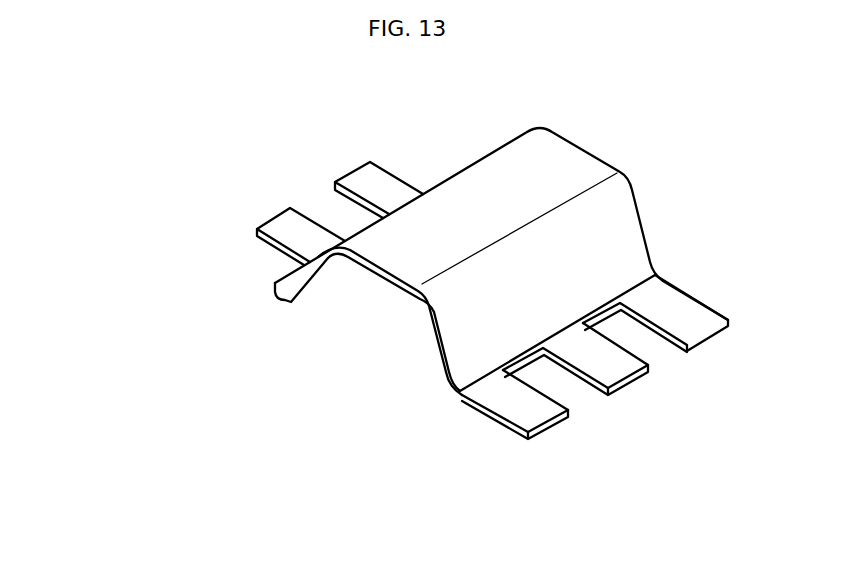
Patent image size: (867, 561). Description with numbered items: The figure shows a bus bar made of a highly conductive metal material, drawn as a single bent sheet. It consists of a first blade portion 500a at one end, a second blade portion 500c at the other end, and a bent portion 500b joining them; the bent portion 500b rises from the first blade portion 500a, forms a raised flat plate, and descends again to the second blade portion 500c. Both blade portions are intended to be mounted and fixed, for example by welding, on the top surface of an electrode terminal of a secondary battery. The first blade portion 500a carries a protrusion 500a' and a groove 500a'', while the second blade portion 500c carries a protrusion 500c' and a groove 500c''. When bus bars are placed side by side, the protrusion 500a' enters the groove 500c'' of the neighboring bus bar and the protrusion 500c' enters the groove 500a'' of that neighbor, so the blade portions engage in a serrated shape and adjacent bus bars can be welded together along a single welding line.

The first blade portion 500a is at (246, 232).
The protrusion 500a' is at (283, 213).
The groove 500a'' is at (236, 275).
The bent portion 500b is at (567, 163).
The second blade portion 500c is at (605, 378).
The protrusion 500c' is at (564, 426).
The groove 500c'' is at (587, 379).